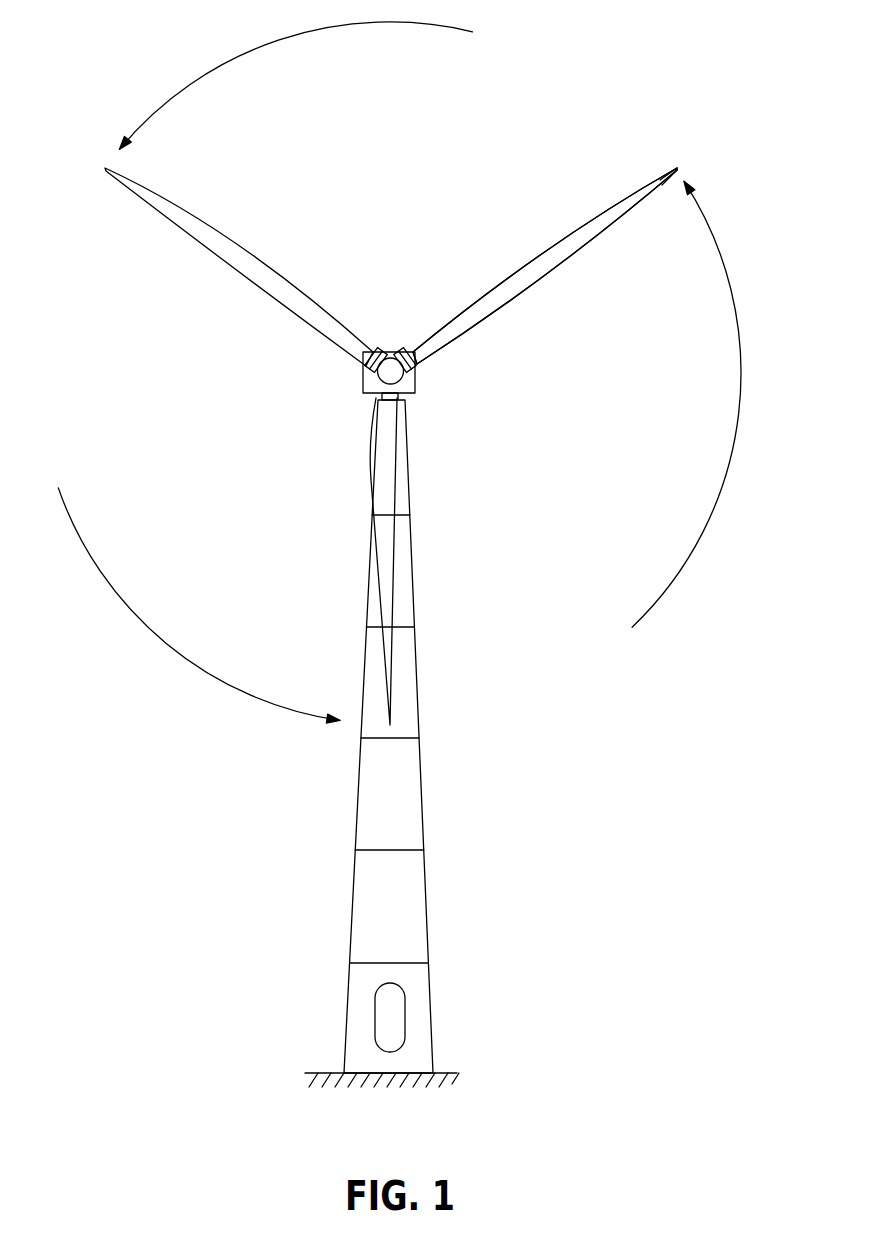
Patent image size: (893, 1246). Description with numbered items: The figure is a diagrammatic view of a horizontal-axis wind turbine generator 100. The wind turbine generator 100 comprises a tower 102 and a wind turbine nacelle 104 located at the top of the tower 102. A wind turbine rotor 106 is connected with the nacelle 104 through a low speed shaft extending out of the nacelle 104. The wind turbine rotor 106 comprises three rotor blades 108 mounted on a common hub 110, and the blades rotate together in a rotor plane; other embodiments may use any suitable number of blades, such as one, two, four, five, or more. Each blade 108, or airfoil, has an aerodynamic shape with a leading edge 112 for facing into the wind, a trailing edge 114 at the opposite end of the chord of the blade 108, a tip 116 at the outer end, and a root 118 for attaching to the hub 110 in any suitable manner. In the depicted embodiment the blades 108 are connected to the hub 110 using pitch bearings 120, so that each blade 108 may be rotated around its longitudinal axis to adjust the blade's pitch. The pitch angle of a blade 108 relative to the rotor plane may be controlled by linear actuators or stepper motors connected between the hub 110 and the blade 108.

The wind turbine generator 100 is at (425, 554).
The tower 102 is at (415, 807).
The wind turbine nacelle 104 is at (416, 394).
The wind turbine rotor 106 is at (449, 416).
The rotor blades 108 is at (233, 258).
The common hub 110 is at (389, 371).
The leading edge 112 is at (567, 224).
The trailing edge 114 is at (573, 265).
The tip 116 is at (683, 163).
The root 118 is at (427, 371).
The pitch bearings 120 is at (412, 364).